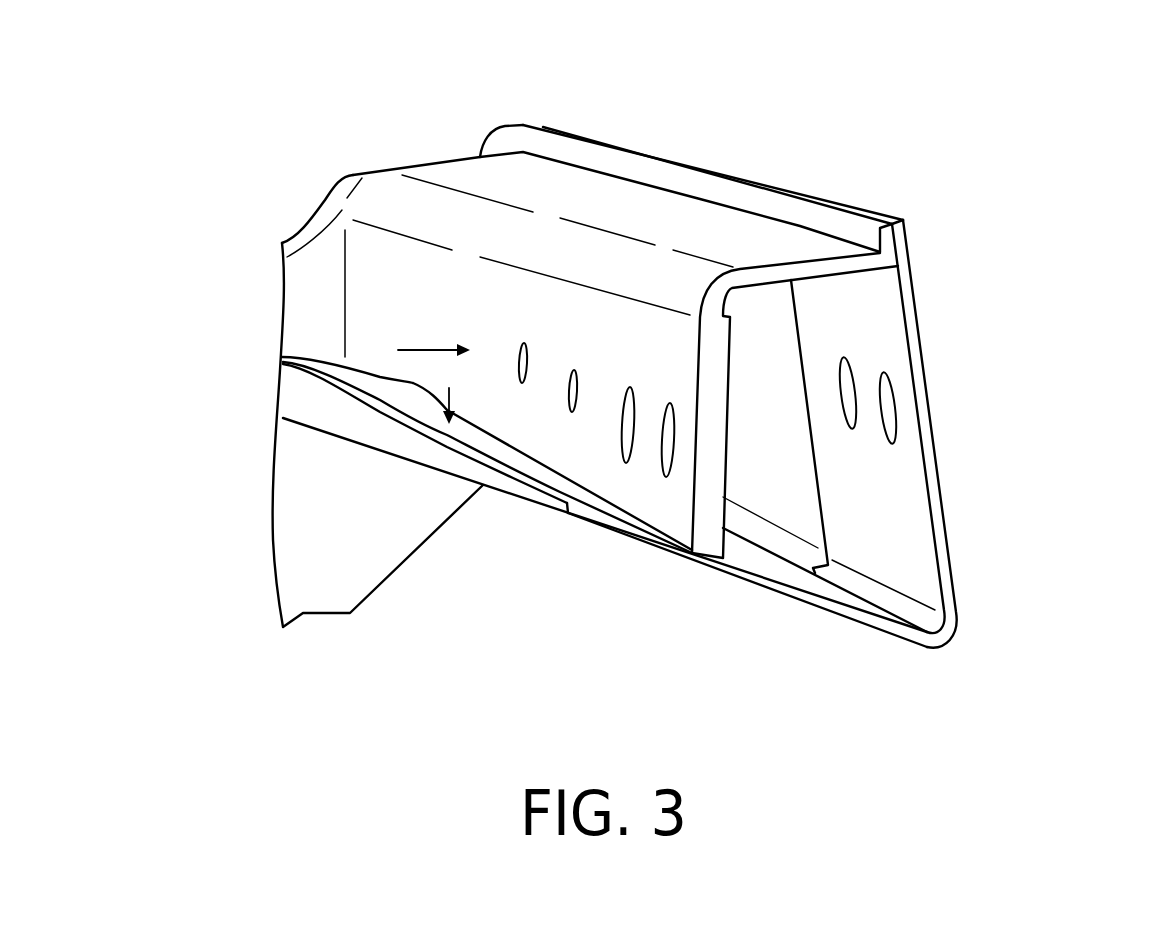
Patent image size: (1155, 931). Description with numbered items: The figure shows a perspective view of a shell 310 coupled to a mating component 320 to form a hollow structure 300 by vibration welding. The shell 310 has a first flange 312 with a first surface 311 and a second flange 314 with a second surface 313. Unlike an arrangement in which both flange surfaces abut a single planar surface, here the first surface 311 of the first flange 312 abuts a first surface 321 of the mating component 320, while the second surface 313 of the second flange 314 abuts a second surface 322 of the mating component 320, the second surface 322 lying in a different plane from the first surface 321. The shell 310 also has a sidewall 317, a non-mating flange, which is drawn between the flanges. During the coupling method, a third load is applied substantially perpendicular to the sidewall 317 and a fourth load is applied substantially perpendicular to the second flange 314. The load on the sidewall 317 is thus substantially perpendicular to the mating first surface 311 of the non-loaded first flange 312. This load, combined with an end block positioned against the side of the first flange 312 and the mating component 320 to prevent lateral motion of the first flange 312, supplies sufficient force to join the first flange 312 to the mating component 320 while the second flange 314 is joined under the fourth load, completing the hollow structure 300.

The hollow structure 300 is at (292, 83).
The shell 310 is at (460, 164).
The first surface 311 is at (905, 238).
The first flange 312 is at (813, 218).
The second surface 313 is at (603, 527).
The second flange 314 is at (527, 468).
The sidewall 317 is at (410, 310).
The mating component 320 is at (927, 500).
The first surface 321 is at (890, 330).
The second surface 322 is at (747, 553).